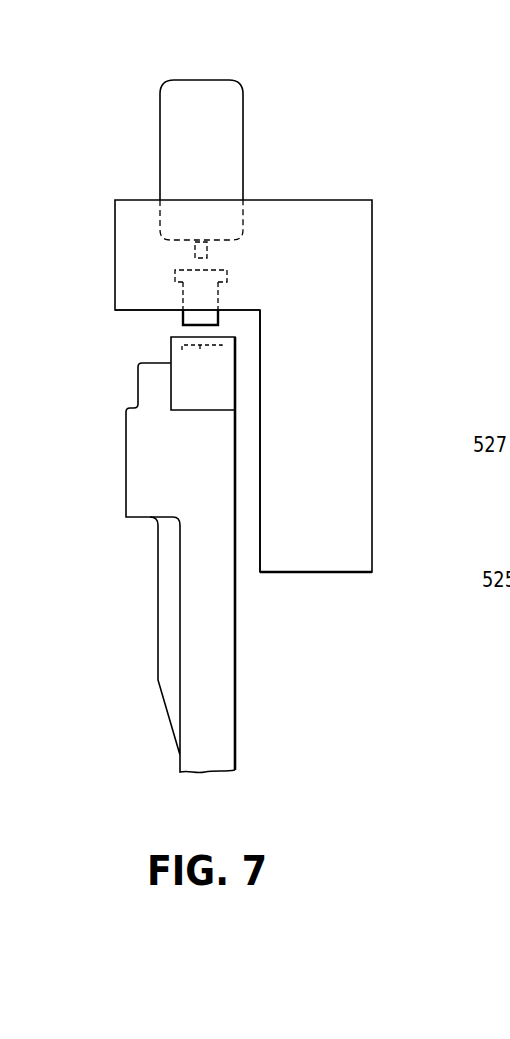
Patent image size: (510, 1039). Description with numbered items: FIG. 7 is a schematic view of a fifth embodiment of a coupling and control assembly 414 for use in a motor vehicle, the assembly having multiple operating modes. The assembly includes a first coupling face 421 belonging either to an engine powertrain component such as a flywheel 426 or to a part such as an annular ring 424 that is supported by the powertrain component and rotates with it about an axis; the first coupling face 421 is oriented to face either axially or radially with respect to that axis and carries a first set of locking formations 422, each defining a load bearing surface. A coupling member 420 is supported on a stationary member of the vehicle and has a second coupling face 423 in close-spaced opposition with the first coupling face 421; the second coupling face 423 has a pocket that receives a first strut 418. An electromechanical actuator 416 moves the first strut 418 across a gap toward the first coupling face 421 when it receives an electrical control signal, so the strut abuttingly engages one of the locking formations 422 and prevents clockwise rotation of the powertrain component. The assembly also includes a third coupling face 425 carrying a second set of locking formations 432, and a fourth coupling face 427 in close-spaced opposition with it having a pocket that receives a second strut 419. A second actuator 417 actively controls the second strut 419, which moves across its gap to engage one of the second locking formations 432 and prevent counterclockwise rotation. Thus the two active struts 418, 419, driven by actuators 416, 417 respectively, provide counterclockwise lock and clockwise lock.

The coupling and control assembly 414 is at (251, 394).
The electromechanical actuator 416 is at (270, 140).
The electromechanical actuator 417 is at (243, 150).
The first strut 418 is at (270, 246).
The second strut 419 is at (218, 296).
The coupling member 420 is at (372, 385).
The first coupling face 421 is at (236, 658).
The first set of locking formations 422 is at (127, 341).
The second coupling face 423 is at (262, 518).
The annular ring 424 is at (237, 385).
The third coupling face 425 is at (155, 360).
The flywheel 426 is at (238, 695).
The fourth coupling face 427 is at (118, 316).
The second set of locking formations 432 is at (199, 352).